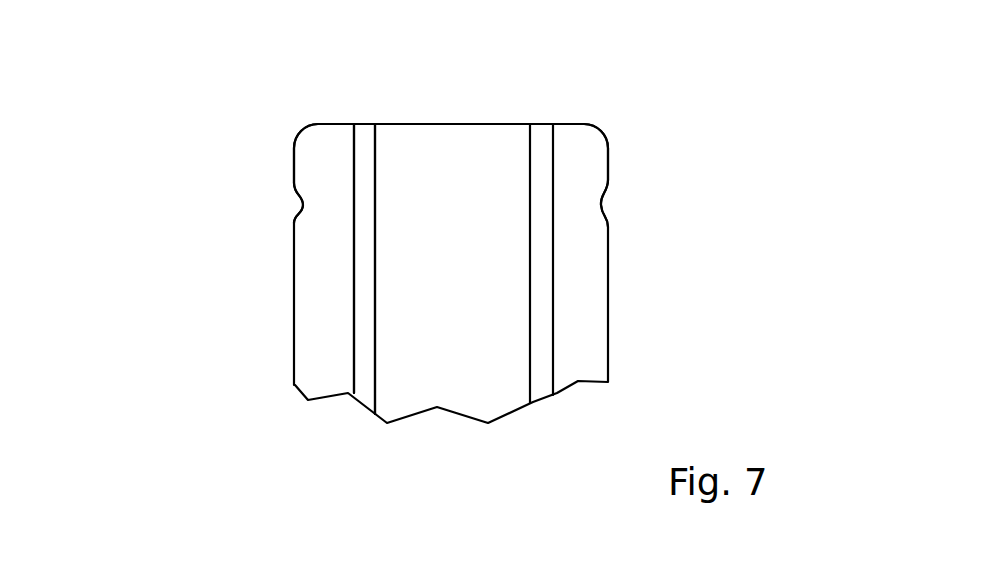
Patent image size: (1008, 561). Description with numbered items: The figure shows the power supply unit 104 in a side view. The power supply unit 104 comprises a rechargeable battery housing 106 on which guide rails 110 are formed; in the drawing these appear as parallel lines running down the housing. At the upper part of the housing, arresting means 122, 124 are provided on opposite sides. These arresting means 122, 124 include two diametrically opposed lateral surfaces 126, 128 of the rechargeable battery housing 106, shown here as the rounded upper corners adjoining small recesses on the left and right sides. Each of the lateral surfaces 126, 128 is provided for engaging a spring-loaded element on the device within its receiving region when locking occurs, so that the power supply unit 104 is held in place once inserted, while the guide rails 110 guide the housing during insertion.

The power supply unit 104 is at (172, 277).
The rechargeable battery housing 106 is at (578, 293).
The guide rails 110 is at (368, 158).
The arresting means 122 is at (298, 218).
The arresting means 124 is at (603, 210).
The lateral surface 126 is at (293, 170).
The lateral surface 128 is at (608, 172).